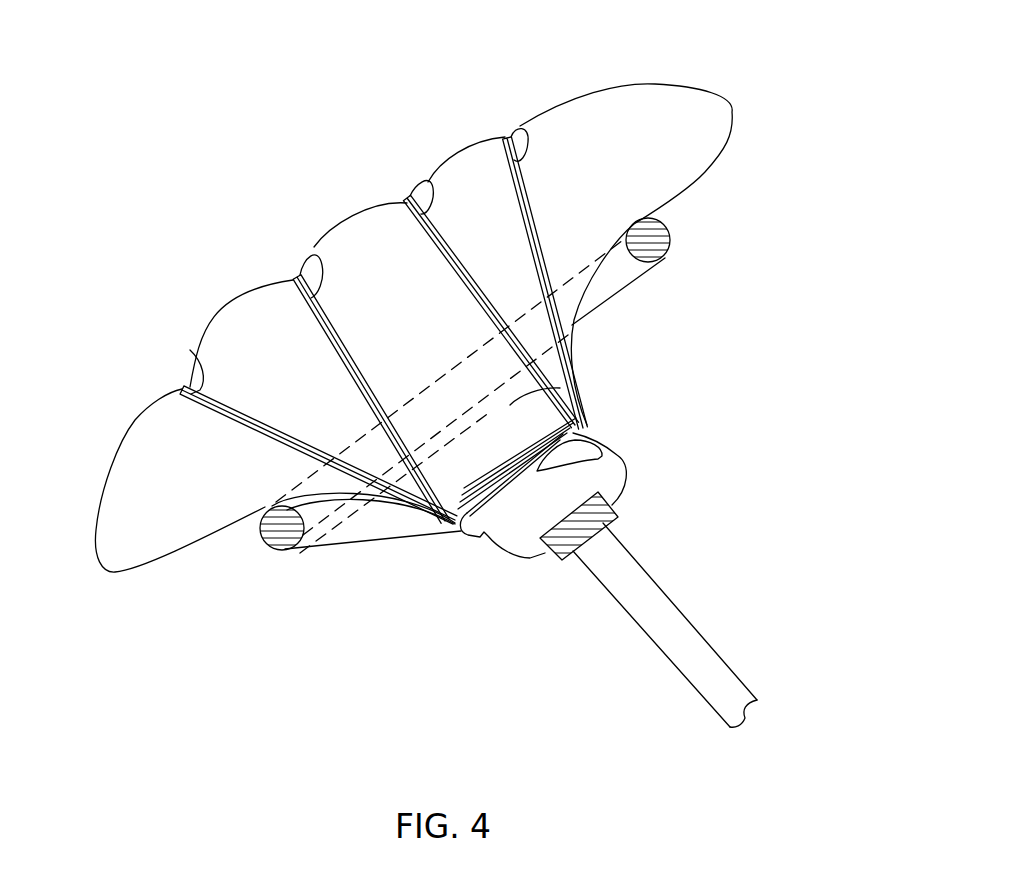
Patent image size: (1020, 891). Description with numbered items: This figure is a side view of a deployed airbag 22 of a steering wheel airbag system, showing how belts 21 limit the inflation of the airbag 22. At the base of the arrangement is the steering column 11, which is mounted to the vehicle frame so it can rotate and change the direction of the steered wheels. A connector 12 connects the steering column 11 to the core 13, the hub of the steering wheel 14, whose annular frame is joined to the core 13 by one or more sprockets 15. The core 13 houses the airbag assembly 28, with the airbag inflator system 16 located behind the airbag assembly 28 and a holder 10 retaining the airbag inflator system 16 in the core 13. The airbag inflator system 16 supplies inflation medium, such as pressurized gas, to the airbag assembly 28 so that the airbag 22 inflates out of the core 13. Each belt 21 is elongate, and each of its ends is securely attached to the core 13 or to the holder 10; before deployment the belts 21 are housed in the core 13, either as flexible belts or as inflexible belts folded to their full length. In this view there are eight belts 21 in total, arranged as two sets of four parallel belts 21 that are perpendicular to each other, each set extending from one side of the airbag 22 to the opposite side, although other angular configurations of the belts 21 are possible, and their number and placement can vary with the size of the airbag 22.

The holder 10 is at (603, 452).
The steering column 11 is at (660, 614).
The connector 12 is at (593, 517).
The core 13 is at (513, 557).
The steering wheel 14 is at (437, 405).
The sprockets 15 is at (348, 526).
The airbag inflator system 16 is at (588, 414).
The belts 21 is at (190, 352).
The airbag 22 is at (247, 297).
The airbag assembly 28 is at (560, 388).